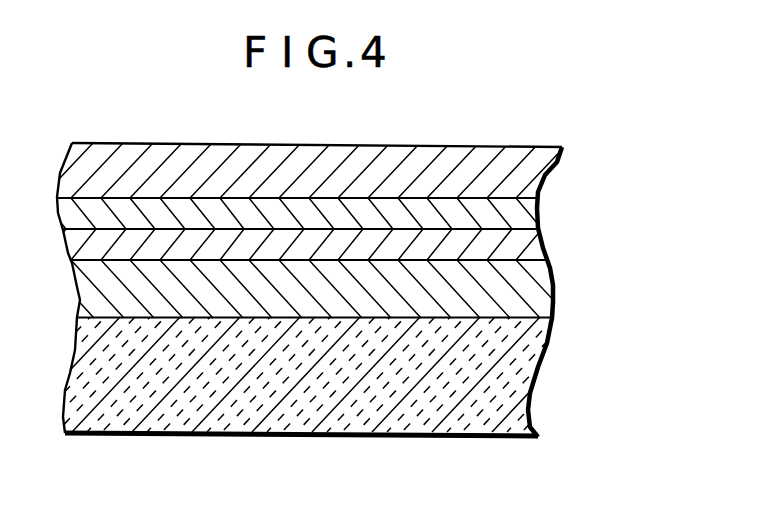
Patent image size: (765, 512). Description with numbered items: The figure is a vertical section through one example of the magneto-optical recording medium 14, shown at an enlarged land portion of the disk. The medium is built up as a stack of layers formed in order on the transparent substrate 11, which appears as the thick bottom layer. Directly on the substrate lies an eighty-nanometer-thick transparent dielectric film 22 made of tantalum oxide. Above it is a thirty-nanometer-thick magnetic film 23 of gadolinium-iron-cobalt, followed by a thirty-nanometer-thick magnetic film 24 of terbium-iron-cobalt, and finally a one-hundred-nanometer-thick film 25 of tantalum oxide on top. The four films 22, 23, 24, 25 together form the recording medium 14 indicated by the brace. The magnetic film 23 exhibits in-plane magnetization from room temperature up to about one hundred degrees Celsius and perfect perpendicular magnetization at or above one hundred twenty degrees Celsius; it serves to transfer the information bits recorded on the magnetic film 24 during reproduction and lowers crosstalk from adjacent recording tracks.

The transparent substrate 11 is at (535, 388).
The magneto-optical recording medium 14 is at (627, 182).
The transparent dielectric film 22 is at (533, 292).
The magnetic film 23 is at (523, 252).
The magnetic film 24 is at (520, 223).
The film 25 is at (530, 177).